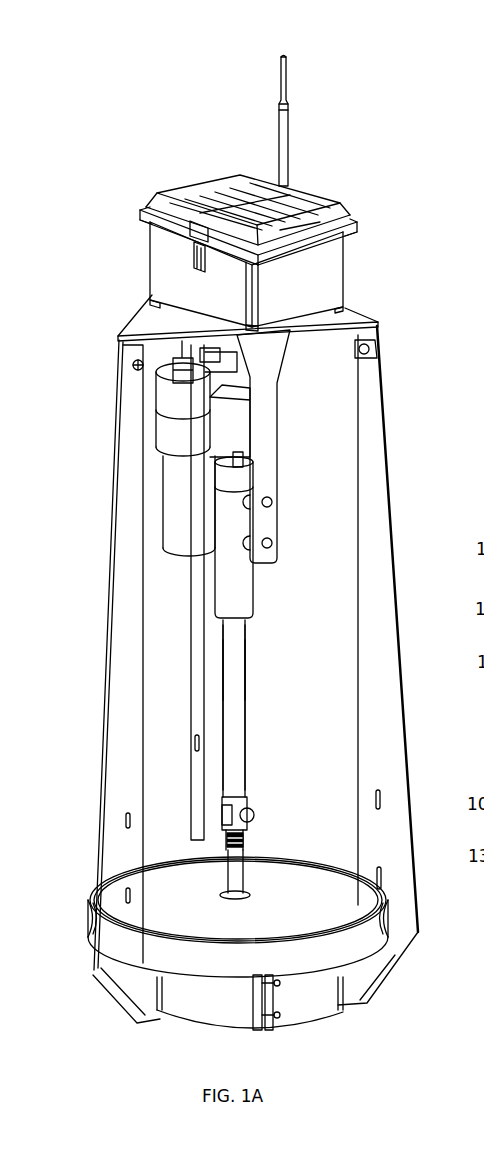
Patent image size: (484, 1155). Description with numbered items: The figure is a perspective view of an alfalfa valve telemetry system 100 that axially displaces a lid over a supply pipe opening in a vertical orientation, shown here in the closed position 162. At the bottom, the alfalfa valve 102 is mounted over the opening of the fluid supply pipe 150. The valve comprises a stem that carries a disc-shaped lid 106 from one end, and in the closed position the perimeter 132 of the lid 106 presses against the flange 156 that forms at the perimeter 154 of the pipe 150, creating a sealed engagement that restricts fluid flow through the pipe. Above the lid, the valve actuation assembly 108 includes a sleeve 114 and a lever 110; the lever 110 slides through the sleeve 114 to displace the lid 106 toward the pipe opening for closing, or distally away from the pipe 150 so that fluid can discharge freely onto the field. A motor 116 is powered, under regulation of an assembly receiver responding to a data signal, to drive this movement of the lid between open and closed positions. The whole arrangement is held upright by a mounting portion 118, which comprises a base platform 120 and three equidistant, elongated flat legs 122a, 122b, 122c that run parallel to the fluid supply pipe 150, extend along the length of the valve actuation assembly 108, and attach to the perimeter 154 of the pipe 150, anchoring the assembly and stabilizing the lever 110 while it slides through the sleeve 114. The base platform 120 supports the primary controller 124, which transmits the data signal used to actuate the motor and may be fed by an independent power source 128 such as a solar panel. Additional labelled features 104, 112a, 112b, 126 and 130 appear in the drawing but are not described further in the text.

The alfalfa valve telemetry system 100 is at (130, 78).
The alfalfa valve 102 is at (318, 838).
The coupling 104 is at (247, 842).
The lid 106 is at (157, 910).
The valve actuation assembly 108 is at (268, 644).
The lever 110 is at (237, 706).
The first rod end 112a is at (237, 680).
The second rod end 112b is at (238, 788).
The sleeve 114 is at (243, 598).
The motor 116 is at (220, 420).
The mounting portion 118 is at (394, 477).
The base platform 120 is at (147, 325).
The leg 122a is at (123, 675).
The leg 122b is at (195, 642).
The leg 122c is at (391, 614).
The primary controller 124 is at (378, 270).
The antenna 126 is at (285, 125).
The independent power source 128 is at (228, 190).
The motor 130 is at (172, 508).
The perimeter of the lid 132 is at (350, 925).
The fluid supply pipe 150 is at (350, 1030).
The perimeter of the pipe 154 is at (207, 955).
The flange 156 is at (383, 888).
The closed position 162 is at (75, 878).